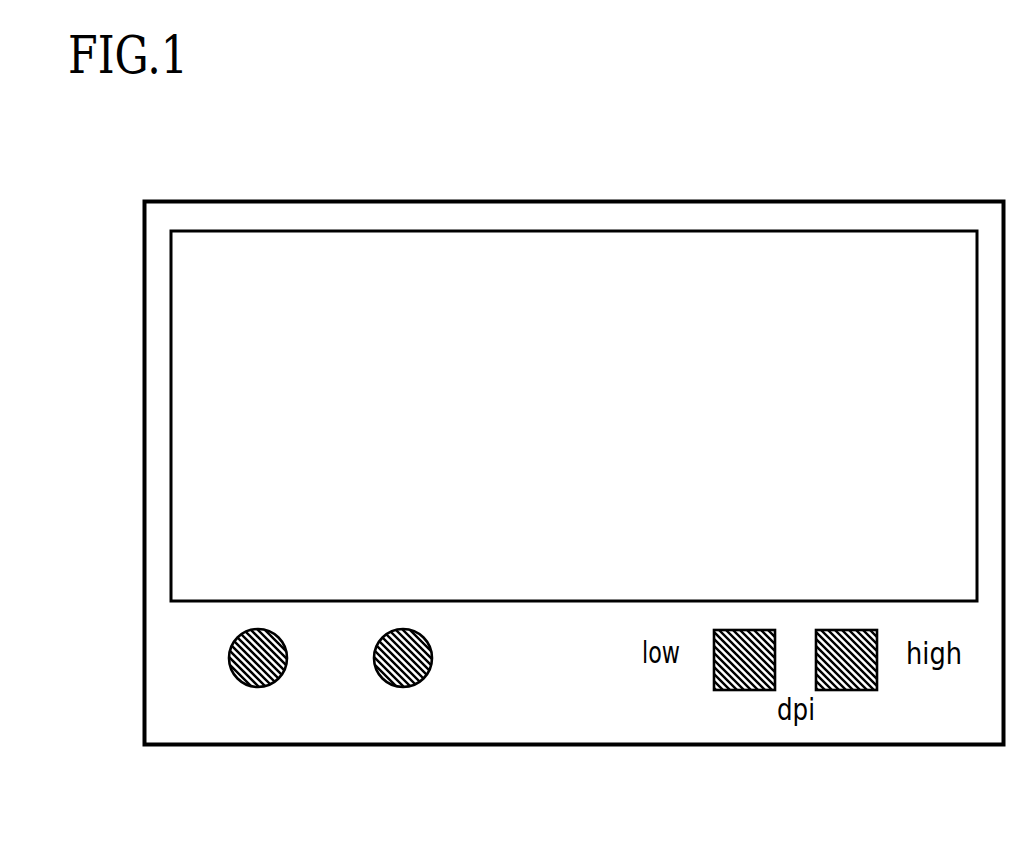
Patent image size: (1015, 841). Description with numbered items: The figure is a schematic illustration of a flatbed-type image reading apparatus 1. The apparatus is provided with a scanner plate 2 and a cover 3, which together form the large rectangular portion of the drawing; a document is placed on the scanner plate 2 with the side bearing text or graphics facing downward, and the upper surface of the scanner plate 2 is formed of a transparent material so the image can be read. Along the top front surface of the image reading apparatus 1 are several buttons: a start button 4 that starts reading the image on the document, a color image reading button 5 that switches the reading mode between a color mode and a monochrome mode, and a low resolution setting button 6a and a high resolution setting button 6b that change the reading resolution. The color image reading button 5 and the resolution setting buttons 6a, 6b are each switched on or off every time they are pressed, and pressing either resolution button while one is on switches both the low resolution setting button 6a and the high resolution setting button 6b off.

The image reading apparatus 1 is at (600, 200).
The scanner plate 2 is at (158, 380).
The cover 3 is at (356, 293).
The start button 4 is at (229, 662).
The color image reading button 5 is at (372, 652).
The low resolution setting button 6a is at (746, 690).
The high resolution setting button 6b is at (863, 690).